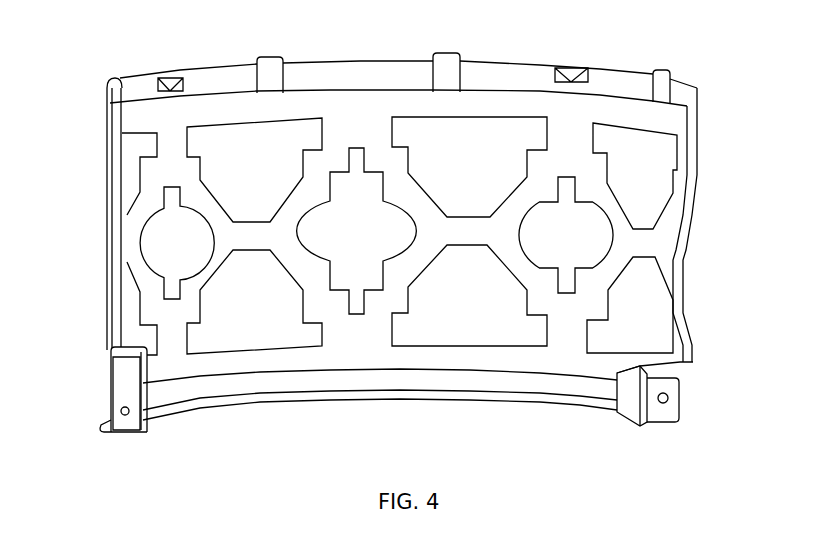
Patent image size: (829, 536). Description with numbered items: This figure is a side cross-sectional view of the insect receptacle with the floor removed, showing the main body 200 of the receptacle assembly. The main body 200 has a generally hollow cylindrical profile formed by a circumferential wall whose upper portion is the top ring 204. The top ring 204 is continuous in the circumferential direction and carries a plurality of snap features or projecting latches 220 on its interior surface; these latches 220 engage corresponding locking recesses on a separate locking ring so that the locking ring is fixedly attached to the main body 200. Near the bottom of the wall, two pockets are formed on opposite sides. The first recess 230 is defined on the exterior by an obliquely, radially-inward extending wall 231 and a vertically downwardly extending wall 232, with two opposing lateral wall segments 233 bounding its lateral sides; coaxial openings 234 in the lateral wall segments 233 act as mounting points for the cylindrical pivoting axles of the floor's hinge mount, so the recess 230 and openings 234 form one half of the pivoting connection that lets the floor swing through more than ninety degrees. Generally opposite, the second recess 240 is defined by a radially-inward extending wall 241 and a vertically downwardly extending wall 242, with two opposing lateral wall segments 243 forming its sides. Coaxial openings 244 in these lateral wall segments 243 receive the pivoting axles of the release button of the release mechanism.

The main body 200 is at (652, 243).
The top ring 204 is at (663, 118).
The projecting latches 220 is at (588, 72).
The first recess 230 is at (696, 416).
The obliquely, radially-inward extending wall 231 is at (679, 371).
The vertically downwardly extending wall 232 is at (640, 413).
The lateral wall segments 233 is at (668, 413).
The coaxial openings 234 is at (674, 397).
The second recess 240 is at (86, 415).
The radially-inward extending wall 241 is at (123, 353).
The vertically downwardly extending wall 242 is at (140, 404).
The lateral wall segments 243 is at (123, 390).
The coaxial openings 244 is at (113, 410).